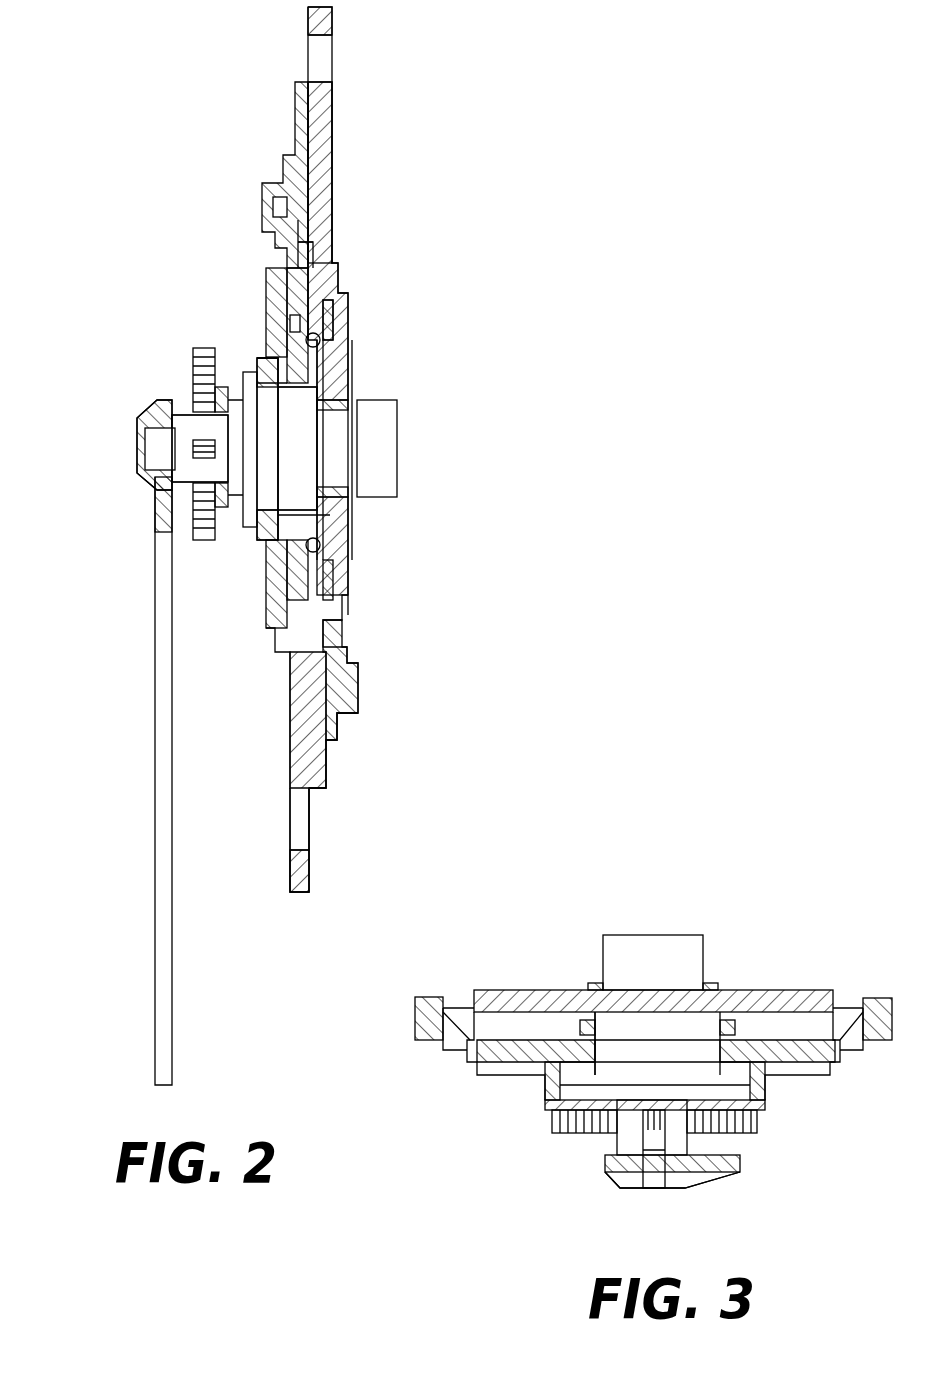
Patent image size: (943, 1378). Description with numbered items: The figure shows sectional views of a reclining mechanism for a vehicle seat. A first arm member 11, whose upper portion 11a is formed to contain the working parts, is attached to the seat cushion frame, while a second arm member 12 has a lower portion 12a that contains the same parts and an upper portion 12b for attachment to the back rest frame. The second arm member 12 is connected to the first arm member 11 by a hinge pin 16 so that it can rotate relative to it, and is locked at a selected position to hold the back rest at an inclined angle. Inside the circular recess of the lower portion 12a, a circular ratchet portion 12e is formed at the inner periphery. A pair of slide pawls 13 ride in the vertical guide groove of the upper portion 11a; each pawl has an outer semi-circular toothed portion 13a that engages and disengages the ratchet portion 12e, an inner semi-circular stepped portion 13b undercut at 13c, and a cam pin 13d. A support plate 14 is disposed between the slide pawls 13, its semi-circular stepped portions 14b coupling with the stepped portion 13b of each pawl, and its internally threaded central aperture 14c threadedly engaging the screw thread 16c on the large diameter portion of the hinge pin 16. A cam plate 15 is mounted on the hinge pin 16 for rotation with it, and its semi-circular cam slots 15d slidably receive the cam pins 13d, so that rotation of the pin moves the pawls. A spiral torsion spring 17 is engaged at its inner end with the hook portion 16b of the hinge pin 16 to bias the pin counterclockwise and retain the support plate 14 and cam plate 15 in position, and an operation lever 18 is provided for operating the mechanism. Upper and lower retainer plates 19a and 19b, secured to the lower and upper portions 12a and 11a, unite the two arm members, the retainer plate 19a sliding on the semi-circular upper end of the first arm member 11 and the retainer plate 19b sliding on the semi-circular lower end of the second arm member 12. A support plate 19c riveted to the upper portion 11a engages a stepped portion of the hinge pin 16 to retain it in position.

In FIG. 2, the first arm member 11 is at (288, 870).
In FIG. 3, the first arm member 11 is at (462, 1058).
In FIG. 2, the upper portion of first arm member 11a is at (272, 320).
In FIG. 2, the second arm member 12 is at (334, 78).
In FIG. 3, the second arm member 12 is at (512, 988).
In FIG. 2, the lower portion of second arm member 12a is at (345, 556).
In FIG. 2, the upper portion of second arm member 12b is at (322, 140).
In FIG. 2, the circular ratchet portion 12e is at (325, 275).
In FIG. 2, the slide pawls 13 is at (278, 287).
In FIG. 2, the semi-circular toothed portion 13a is at (325, 275).
In FIG. 2, the semi-circular stepped portion 13b is at (285, 358).
In FIG. 2, the undercut 13c is at (322, 348).
In FIG. 2, the cam pin 13d is at (325, 322).
In FIG. 2, the support plate 14 is at (283, 550).
In FIG. 3, the support plate 14 is at (745, 1020).
In FIG. 2, the semi-circular stepped portions 14b is at (285, 358).
In FIG. 2, the central aperture 14c is at (300, 412).
In FIG. 3, the central aperture 14c is at (600, 1030).
In FIG. 2, the cam plate 15 is at (338, 533).
In FIG. 2, the semi-circular cam slots 15d is at (325, 322).
In FIG. 2, the hinge pin 16 is at (400, 447).
In FIG. 3, the hinge pin 16 is at (708, 953).
In FIG. 2, the hook portion 16b is at (185, 430).
In FIG. 3, the hook portion 16b is at (632, 1145).
In FIG. 2, the screw thread 16c is at (300, 412).
In FIG. 3, the screw thread 16c is at (600, 1030).
In FIG. 2, the spiral torsion spring 17 is at (205, 538).
In FIG. 3, the spiral torsion spring 17 is at (745, 1120).
In FIG. 2, the operation lever 18 is at (158, 688).
In FIG. 3, the operation lever 18 is at (715, 1162).
In FIG. 2, the upper retainer plate 19a is at (300, 110).
In FIG. 2, the lower retainer plate 19b is at (338, 730).
In FIG. 2, the support plate 19c is at (225, 493).
In FIG. 3, the support plate 19c is at (548, 1105).